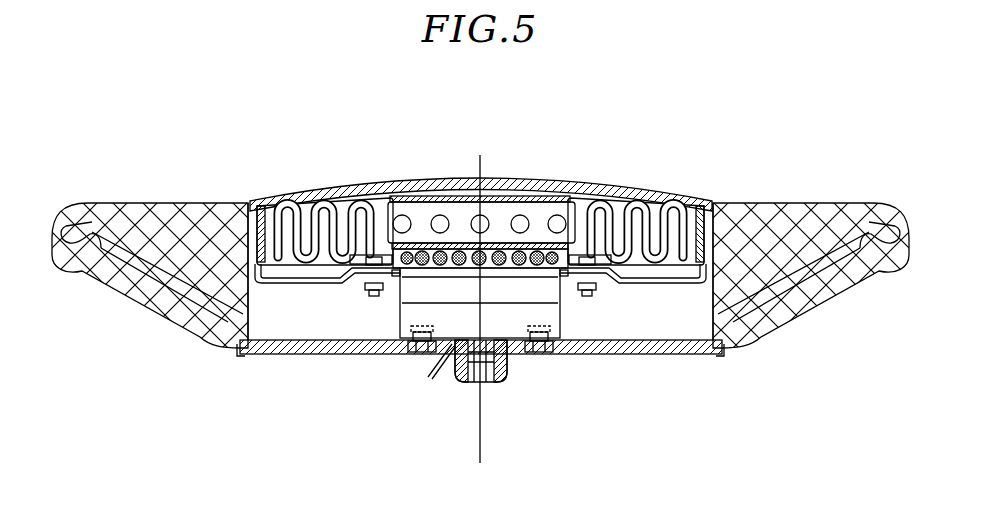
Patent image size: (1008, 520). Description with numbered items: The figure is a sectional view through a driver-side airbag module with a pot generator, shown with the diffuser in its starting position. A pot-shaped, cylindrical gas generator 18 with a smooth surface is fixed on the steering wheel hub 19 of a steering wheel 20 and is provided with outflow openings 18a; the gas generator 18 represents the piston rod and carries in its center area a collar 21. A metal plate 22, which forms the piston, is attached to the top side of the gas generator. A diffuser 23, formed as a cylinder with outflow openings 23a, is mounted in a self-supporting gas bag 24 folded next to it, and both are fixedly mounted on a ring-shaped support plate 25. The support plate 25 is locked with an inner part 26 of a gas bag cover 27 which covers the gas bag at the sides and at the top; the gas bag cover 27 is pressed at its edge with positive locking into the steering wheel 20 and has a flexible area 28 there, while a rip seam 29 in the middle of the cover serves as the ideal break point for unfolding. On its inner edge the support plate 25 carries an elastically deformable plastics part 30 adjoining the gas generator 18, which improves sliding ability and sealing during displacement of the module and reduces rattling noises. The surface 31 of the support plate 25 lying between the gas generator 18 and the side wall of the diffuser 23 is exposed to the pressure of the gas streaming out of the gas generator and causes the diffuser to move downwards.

The gas generator 18 is at (497, 315).
The outflow openings 18a is at (432, 246).
The steering wheel hub 19 is at (477, 385).
The steering wheel 20 is at (178, 223).
The collar 21 is at (540, 300).
The metal plate 22 is at (575, 244).
The diffuser 23 is at (575, 203).
The outflow openings 23a is at (562, 217).
The gas bag 24 is at (300, 218).
The support plate 25 is at (307, 264).
The inner part 26 is at (259, 206).
The gas bag cover 27 is at (517, 196).
The flexible area 28 is at (241, 188).
The rip seam 29 is at (492, 197).
The plastics part 30 is at (574, 305).
The surface 31 is at (391, 300).